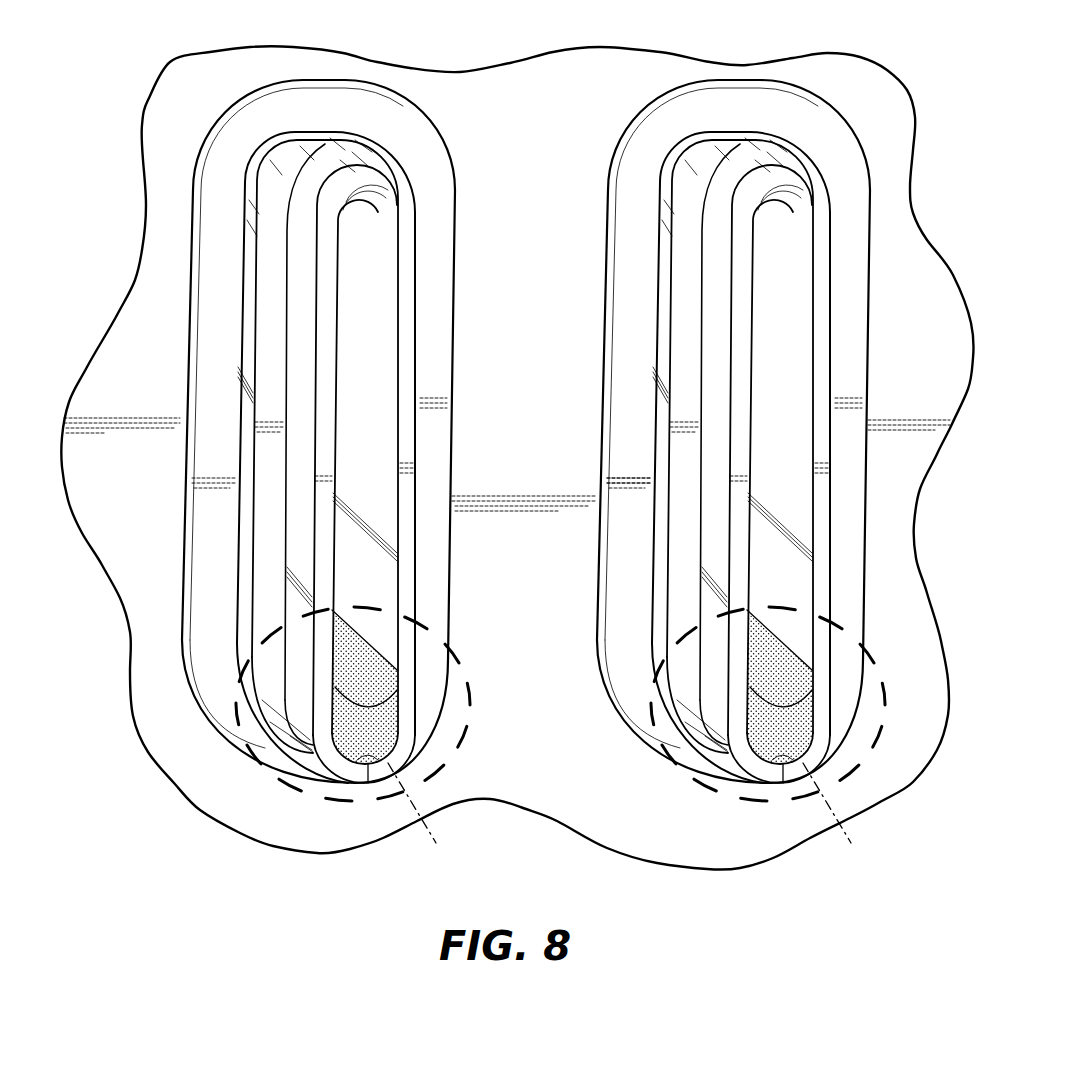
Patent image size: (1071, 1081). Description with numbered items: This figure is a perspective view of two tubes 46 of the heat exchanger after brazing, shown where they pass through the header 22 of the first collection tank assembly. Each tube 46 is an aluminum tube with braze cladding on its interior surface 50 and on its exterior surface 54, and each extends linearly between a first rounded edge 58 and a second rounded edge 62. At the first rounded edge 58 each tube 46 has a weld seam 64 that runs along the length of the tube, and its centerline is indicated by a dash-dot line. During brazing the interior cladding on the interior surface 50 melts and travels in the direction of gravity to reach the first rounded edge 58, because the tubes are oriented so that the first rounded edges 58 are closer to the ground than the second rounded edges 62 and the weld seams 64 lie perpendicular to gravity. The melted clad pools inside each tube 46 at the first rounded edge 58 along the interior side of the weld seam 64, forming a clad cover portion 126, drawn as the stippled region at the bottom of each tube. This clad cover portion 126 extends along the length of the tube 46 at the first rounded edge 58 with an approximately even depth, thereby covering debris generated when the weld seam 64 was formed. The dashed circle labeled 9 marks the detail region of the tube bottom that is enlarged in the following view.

The header 22 is at (587, 145).
The tube 46 is at (333, 320).
The interior surface 50 is at (388, 278).
The exterior surface 54 is at (300, 470).
The first rounded edge 58 is at (360, 786).
The second rounded edge 62 is at (362, 175).
The weld seam 64 is at (631, 810).
The clad cover portion 126 is at (382, 727).
The detail view FIG. 9 indicator 9 is at (247, 757).